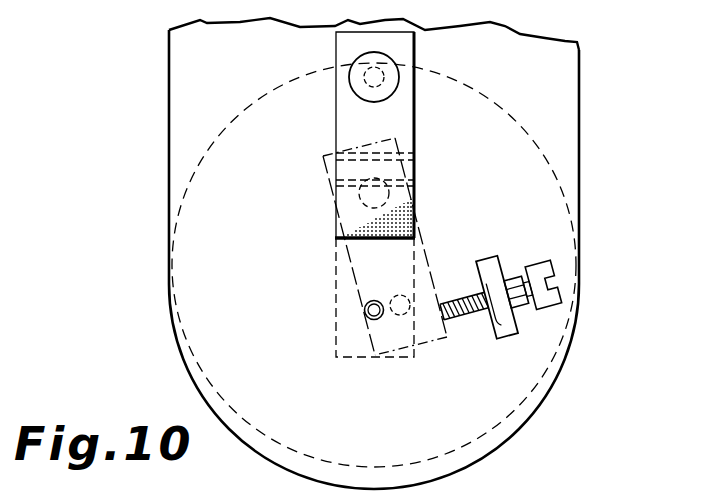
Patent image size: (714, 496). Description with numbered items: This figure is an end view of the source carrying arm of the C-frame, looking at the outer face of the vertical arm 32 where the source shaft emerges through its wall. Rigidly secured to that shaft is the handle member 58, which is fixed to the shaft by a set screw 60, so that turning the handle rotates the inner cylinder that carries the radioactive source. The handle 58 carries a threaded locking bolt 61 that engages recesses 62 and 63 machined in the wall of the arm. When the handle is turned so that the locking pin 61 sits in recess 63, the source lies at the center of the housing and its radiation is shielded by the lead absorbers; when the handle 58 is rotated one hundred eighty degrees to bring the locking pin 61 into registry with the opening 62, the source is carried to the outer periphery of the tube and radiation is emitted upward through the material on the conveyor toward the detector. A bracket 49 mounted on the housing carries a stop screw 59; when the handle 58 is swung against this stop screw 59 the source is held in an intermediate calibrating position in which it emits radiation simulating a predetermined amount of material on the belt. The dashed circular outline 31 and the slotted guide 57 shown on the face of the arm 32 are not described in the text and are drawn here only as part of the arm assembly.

The circular recess 31 is at (268, 88).
The vertical arm 32 is at (566, 93).
The bracket 49 is at (500, 340).
The slide block 57 is at (345, 208).
The handle member 58 is at (398, 228).
The stop screw 59 is at (560, 299).
The set screw 60 is at (416, 138).
The threaded locking bolt 61 is at (388, 77).
The recess 62 is at (363, 311).
The recess 63 is at (400, 87).